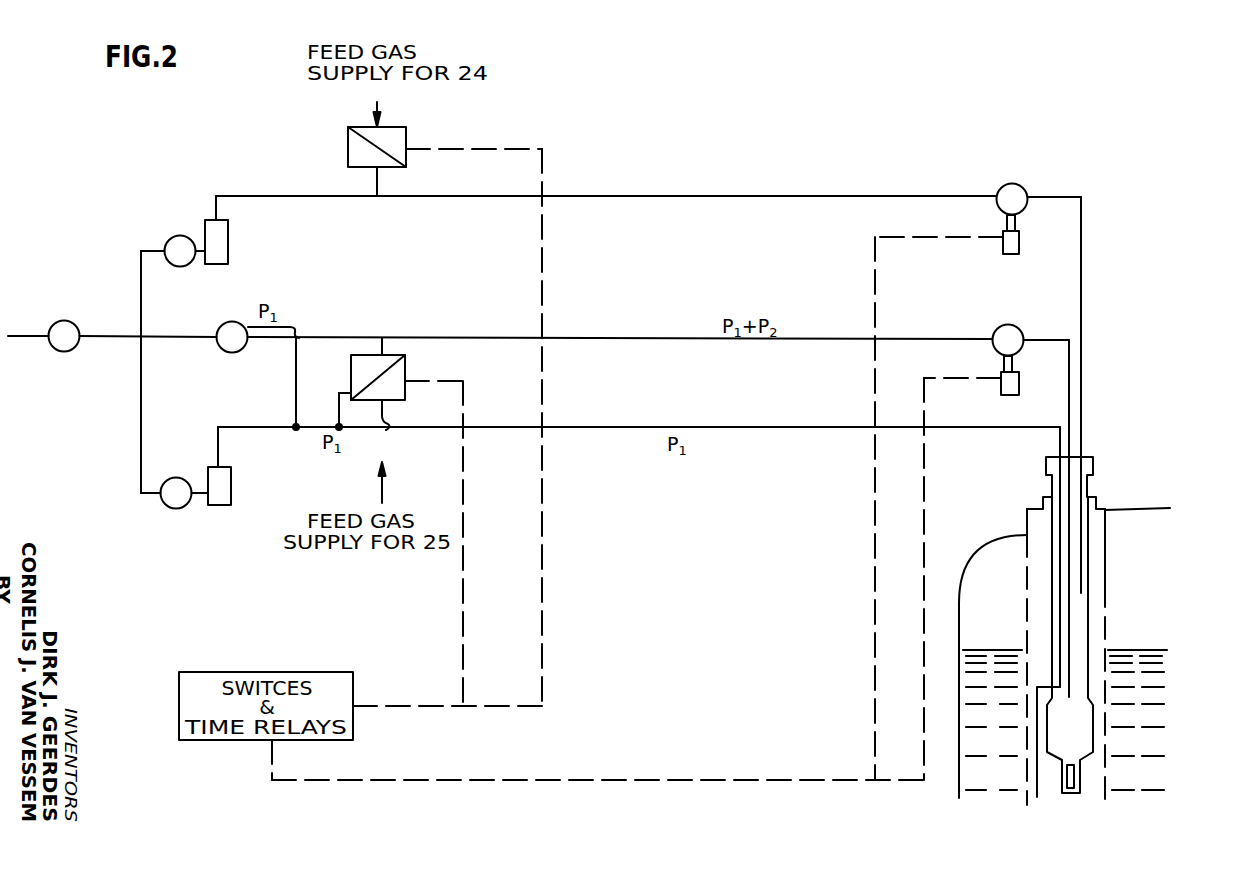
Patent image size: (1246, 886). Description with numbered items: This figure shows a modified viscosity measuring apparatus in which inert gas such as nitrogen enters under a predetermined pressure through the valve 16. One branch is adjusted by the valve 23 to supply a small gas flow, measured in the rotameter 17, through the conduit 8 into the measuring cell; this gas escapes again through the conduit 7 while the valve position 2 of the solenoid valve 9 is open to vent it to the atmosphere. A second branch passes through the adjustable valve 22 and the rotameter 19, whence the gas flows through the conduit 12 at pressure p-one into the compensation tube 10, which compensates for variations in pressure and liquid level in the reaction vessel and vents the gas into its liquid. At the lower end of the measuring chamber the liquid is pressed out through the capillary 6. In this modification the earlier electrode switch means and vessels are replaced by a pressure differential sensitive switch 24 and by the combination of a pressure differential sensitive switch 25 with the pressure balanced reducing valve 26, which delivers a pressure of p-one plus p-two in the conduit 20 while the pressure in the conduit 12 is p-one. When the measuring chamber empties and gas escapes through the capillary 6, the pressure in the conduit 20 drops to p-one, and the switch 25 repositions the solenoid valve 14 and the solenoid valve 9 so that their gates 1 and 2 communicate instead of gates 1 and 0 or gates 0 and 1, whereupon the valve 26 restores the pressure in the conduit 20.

The valve gate 0 is at (1011, 170).
The valve gate 1 is at (988, 210).
The valve gate 2 is at (1038, 210).
The capillary tube 6 is at (1080, 778).
The conduit 7 is at (1069, 595).
The conduit 8 is at (1082, 396).
The solenoid valve 9 is at (1012, 394).
The compensation tube 10 is at (1057, 603).
The conduit 12 is at (806, 429).
The solenoid valve 14 is at (1019, 243).
The valve 16 is at (76, 348).
The rotameter 17 is at (228, 242).
The rotameter 19 is at (231, 478).
The conduit 20 is at (677, 340).
The adjustable valve 22 is at (184, 507).
The valve 23 is at (186, 266).
The pressure differential sensitive switch 24 is at (406, 135).
The pressure differential sensitive switch 25 is at (405, 355).
The pressure balanced reducing valve 26 is at (218, 328).